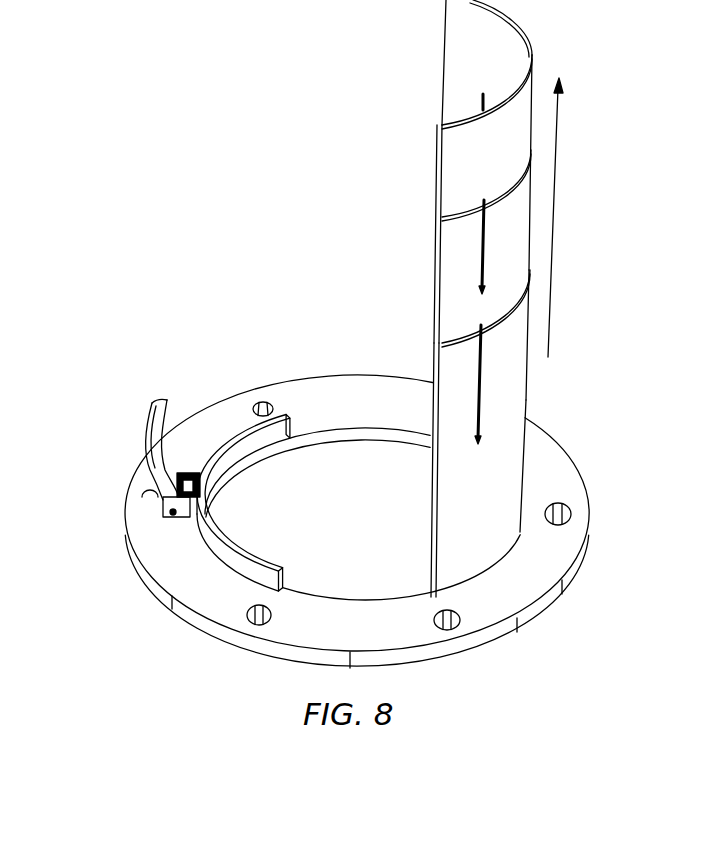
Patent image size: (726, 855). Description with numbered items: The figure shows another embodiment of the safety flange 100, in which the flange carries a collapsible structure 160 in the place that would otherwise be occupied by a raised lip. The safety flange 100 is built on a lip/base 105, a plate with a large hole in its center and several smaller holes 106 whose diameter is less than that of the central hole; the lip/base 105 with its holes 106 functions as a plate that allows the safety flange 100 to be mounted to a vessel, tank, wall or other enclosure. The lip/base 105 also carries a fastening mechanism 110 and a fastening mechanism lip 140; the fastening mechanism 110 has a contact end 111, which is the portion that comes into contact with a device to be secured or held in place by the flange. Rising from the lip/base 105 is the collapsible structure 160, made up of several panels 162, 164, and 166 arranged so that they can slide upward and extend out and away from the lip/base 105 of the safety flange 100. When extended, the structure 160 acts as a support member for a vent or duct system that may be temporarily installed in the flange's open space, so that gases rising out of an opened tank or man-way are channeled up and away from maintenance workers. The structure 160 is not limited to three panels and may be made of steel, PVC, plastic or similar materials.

The safety flange 100 is at (100, 482).
The lip/base 105 is at (176, 562).
The holes 106 is at (256, 404).
The fastening mechanism 110 is at (148, 436).
The contact end 111 is at (157, 400).
The fastening mechanism lip 140 is at (247, 563).
The collapsible structure 160 is at (533, 383).
The panel 162 is at (458, 53).
The panel 164 is at (456, 259).
The panel 166 is at (457, 357).